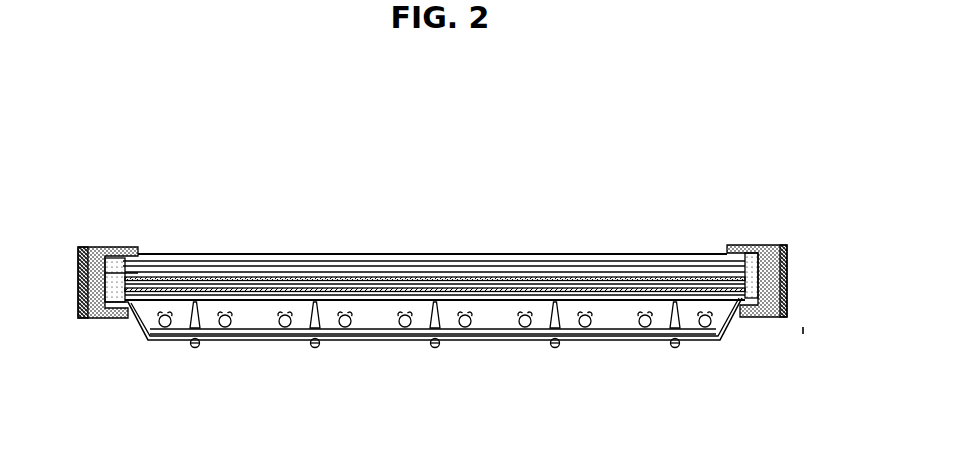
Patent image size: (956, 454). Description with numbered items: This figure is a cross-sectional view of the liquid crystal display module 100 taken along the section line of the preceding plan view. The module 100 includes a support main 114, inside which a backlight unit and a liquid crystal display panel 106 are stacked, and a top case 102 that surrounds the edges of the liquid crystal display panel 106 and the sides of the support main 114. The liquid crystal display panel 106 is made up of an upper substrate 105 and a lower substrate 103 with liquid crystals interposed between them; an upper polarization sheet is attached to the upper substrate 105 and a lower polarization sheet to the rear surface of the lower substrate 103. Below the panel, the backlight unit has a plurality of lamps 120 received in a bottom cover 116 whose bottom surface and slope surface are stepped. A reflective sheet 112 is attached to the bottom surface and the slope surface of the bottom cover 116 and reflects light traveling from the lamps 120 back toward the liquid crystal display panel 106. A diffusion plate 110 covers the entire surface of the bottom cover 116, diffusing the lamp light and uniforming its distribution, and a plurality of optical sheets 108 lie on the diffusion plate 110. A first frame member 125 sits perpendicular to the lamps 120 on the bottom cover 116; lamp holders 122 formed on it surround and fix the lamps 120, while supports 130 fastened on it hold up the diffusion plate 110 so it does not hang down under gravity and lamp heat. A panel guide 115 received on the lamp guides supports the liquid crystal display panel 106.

The liquid crystal display module 100 is at (158, 141).
The top case 102 is at (105, 248).
The lower substrate 103 is at (278, 194).
The upper substrate 105 is at (278, 258).
The liquid crystal display panel 106 is at (434, 218).
The optical sheets 108 is at (470, 290).
The diffusion plate 110 is at (600, 297).
The reflective sheet 112 is at (247, 336).
The support main 114 is at (772, 244).
The panel guide 115 is at (753, 244).
The bottom cover 116 is at (362, 337).
The lamps 120 is at (525, 323).
The lamp holders 122 is at (452, 326).
The first frame member 125 is at (492, 333).
The supports 130 is at (557, 312).